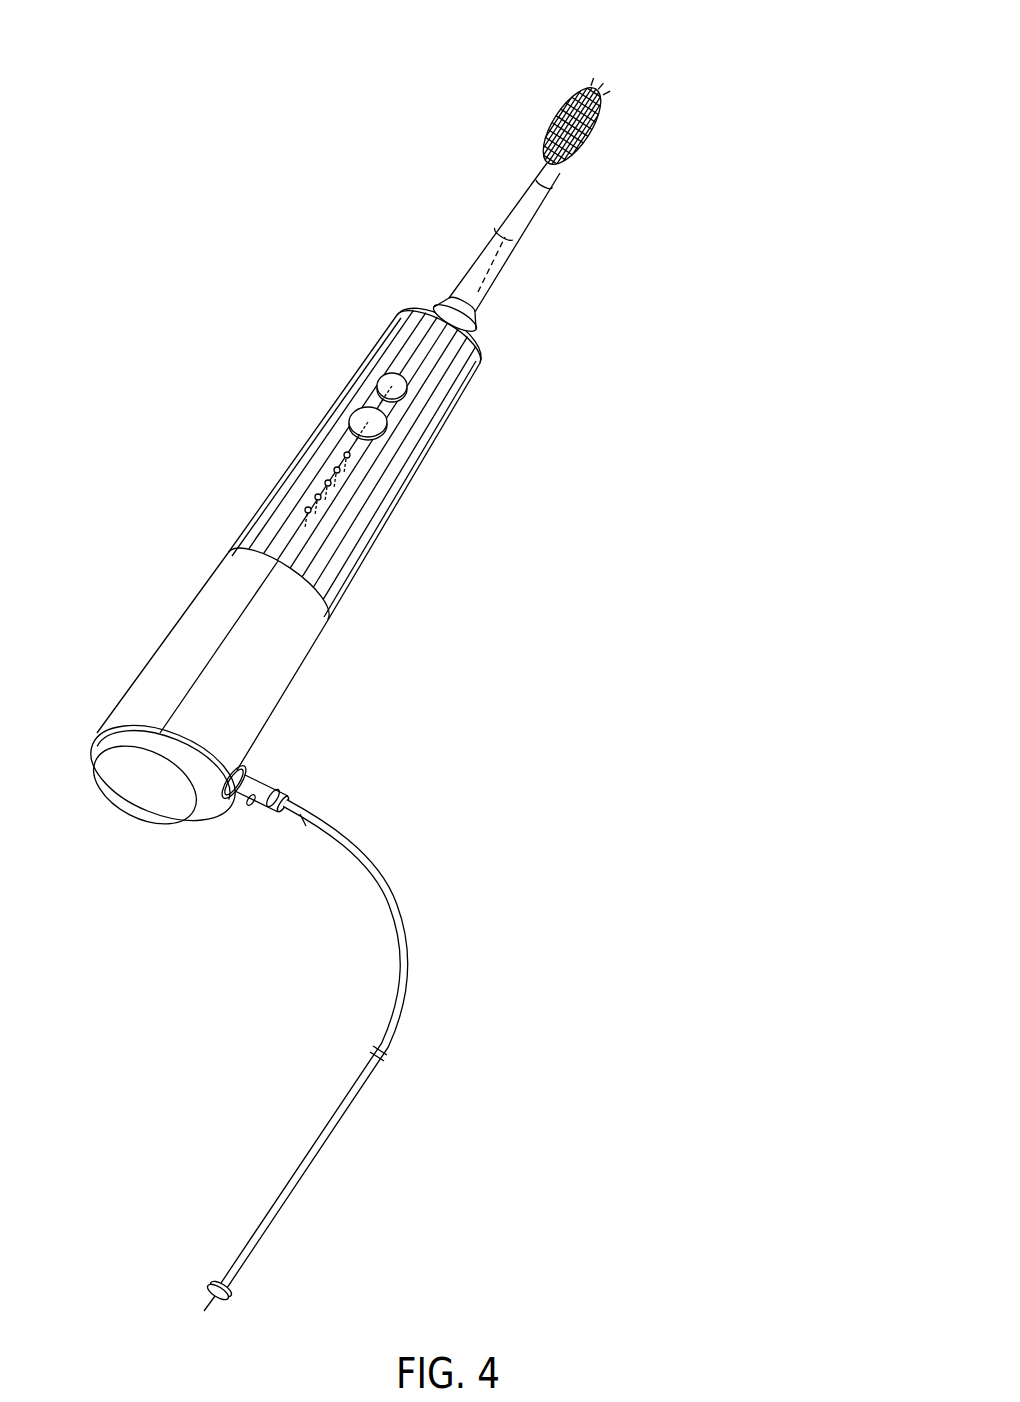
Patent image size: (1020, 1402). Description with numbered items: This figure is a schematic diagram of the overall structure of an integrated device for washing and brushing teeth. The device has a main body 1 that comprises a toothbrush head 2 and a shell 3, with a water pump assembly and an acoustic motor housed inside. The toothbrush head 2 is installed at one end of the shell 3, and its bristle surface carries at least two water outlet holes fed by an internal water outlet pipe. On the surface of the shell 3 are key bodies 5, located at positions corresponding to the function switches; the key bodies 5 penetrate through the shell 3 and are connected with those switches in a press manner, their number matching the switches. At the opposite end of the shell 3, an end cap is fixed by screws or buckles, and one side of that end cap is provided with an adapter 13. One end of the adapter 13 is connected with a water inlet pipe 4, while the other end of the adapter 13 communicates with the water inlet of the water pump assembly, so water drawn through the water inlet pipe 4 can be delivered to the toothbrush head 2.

The main body 1 is at (323, 625).
The toothbrush head 2 is at (535, 215).
The shell 3 is at (326, 417).
The water inlet pipe 4 is at (385, 897).
The key body 5 is at (393, 383).
The adapter 13 is at (247, 795).